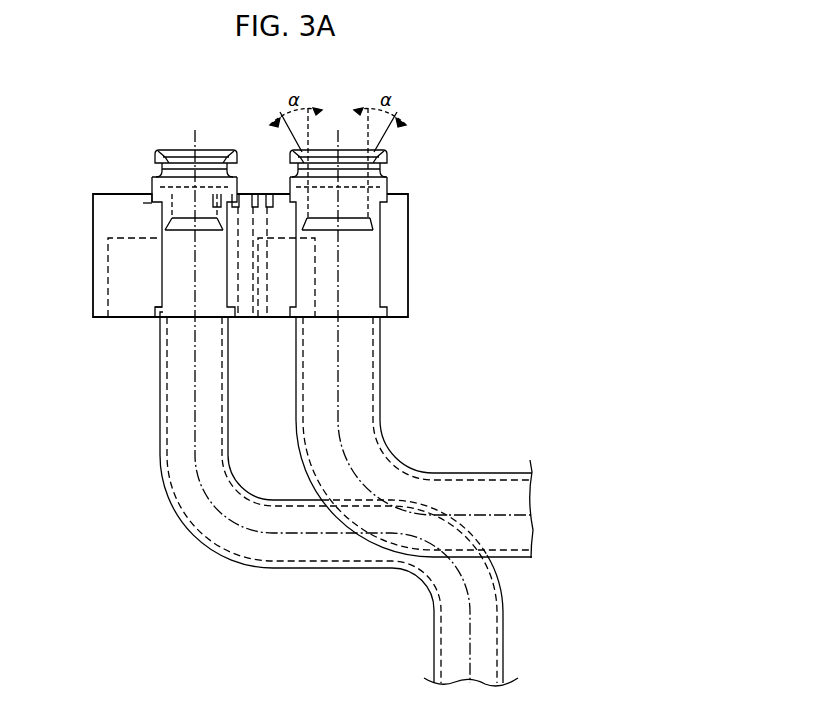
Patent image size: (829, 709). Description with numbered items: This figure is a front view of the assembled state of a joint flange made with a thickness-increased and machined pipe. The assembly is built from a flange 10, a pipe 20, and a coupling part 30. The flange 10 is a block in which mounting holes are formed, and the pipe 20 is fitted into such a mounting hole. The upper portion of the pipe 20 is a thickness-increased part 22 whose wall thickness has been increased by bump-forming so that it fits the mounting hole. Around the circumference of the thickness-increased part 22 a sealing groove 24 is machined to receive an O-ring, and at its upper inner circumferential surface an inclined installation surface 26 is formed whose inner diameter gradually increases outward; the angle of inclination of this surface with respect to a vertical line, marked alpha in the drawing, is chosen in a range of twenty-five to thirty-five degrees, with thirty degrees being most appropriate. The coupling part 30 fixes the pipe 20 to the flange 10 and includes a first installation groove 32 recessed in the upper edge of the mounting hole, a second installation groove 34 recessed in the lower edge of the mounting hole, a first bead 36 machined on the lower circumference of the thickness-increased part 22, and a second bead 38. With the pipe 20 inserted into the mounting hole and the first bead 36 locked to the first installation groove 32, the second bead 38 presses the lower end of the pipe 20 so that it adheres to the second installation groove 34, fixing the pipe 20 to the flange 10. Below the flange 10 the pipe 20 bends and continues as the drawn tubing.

The flange 10 is at (397, 250).
The pipe 20 is at (185, 470).
The thickness-increased part 22 is at (157, 195).
The sealing groove 24 is at (160, 181).
The inclined installation surface 26 is at (173, 152).
The coupling part 30 is at (46, 171).
The first installation groove 32 is at (152, 204).
The second installation groove 34 is at (157, 303).
The first bead 36 is at (153, 193).
The second bead 38 is at (163, 318).